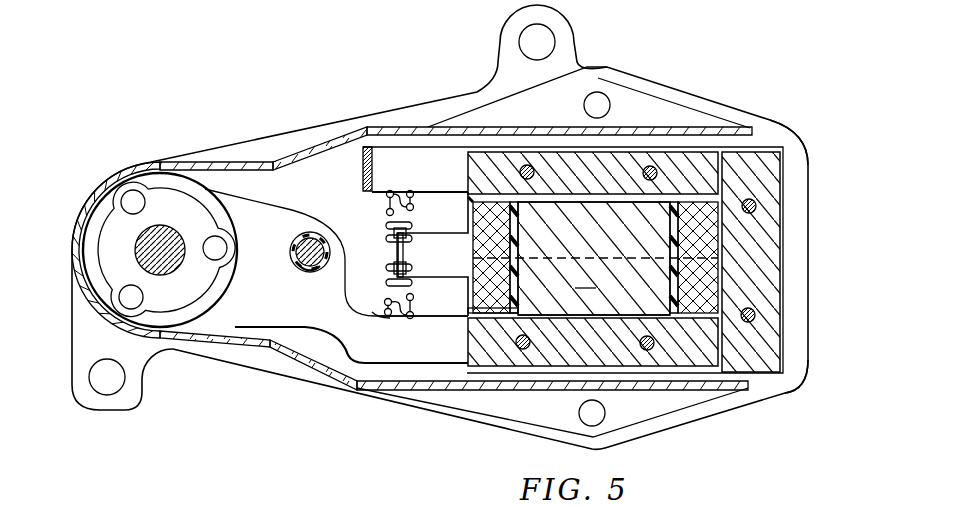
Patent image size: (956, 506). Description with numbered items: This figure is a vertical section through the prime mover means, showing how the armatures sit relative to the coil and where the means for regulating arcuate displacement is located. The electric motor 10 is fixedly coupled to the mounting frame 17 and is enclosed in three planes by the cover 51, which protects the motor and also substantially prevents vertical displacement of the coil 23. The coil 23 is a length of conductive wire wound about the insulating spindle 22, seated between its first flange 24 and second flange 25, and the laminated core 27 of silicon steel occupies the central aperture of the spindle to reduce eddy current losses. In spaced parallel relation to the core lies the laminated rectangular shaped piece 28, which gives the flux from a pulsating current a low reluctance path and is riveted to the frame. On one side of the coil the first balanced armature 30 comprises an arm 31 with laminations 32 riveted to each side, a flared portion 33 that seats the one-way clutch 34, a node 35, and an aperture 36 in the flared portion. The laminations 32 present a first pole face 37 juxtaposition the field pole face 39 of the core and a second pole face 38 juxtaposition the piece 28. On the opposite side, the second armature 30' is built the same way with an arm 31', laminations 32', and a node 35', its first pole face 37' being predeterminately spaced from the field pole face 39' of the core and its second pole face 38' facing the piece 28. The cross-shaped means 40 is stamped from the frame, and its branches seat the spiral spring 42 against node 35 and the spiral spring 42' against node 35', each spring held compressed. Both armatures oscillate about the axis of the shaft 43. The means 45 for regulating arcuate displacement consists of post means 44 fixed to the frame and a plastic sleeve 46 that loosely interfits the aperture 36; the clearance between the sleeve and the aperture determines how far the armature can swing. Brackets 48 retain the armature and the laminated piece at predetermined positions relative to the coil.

The electric motor 10 is at (326, 113).
The mounting frame 17 is at (217, 353).
The spindle 22 is at (672, 284).
The coil 23 is at (477, 264).
The first flange 24 is at (470, 203).
The second flange 25 is at (476, 310).
The laminated core 27 is at (595, 258).
The laminated rectangular shaped piece 28 is at (800, 294).
The first balanced armature 30 is at (373, 303).
The second armature 30' is at (554, 260).
The arm 31 is at (424, 339).
The arm 31' is at (420, 236).
The laminations 32 is at (478, 342).
The laminations 32' is at (494, 173).
The flared portion 33 is at (300, 222).
The one-way clutch 34 is at (228, 238).
The node 35 is at (408, 306).
The node 35' is at (383, 204).
The aperture 36 is at (296, 238).
The first pole face 37 is at (593, 342).
The first pole face 37' is at (593, 173).
The second pole face 38 is at (679, 342).
The second pole face 38' is at (679, 173).
The field pole face 39 is at (594, 305).
The field pole face 39' is at (594, 215).
The cross-shaped means 40 is at (405, 242).
The spiral spring 42 is at (383, 271).
The spiral spring 42' is at (384, 231).
The shaft 43 is at (162, 240).
The post means 44 is at (298, 266).
The means for regulating arcuate displacement 45 is at (308, 276).
The sleeve 46 is at (296, 256).
The brackets 48 is at (774, 150).
The cover 51 is at (70, 250).